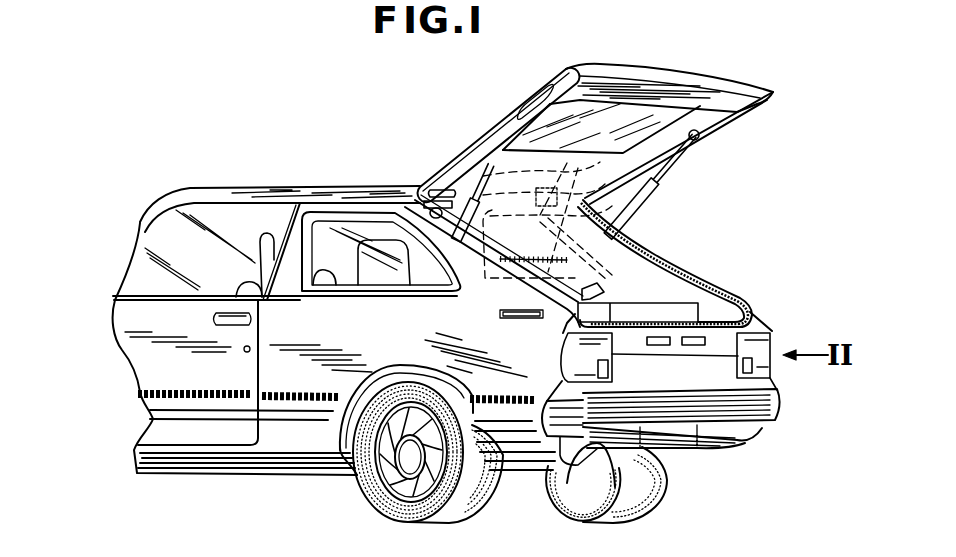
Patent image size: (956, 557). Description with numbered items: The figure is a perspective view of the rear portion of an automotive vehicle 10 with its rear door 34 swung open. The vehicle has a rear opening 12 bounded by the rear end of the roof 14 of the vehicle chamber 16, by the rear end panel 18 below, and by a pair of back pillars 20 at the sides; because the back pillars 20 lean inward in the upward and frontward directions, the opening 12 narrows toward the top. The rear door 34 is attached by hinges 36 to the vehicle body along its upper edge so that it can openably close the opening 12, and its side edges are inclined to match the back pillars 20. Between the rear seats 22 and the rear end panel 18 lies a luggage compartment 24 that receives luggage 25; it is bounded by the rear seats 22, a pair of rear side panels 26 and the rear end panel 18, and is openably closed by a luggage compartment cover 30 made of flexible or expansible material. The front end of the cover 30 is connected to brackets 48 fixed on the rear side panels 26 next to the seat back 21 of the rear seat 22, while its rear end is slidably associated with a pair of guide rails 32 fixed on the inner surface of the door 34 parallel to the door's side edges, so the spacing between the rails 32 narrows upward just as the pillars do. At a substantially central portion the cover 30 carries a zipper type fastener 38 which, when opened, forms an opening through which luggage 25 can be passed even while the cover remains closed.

The automotive vehicle 10 is at (341, 178).
The rear opening 12 is at (687, 290).
The roof 14 is at (271, 185).
The vehicle chamber 16 is at (340, 272).
The rear end panel 18 is at (713, 380).
The back pillars 20 is at (506, 281).
The seat back 21 is at (383, 278).
The rear seats 22 is at (253, 250).
The luggage compartment 24 is at (628, 305).
The luggage 25 is at (641, 322).
The rear side panels 26 is at (702, 272).
The luggage compartment cover 30 is at (517, 158).
The guide rails 32 is at (473, 163).
The rear door 34 is at (635, 78).
The hinges 36 is at (442, 186).
The zipper type fastener 38 is at (534, 258).
The brackets 48 is at (598, 290).